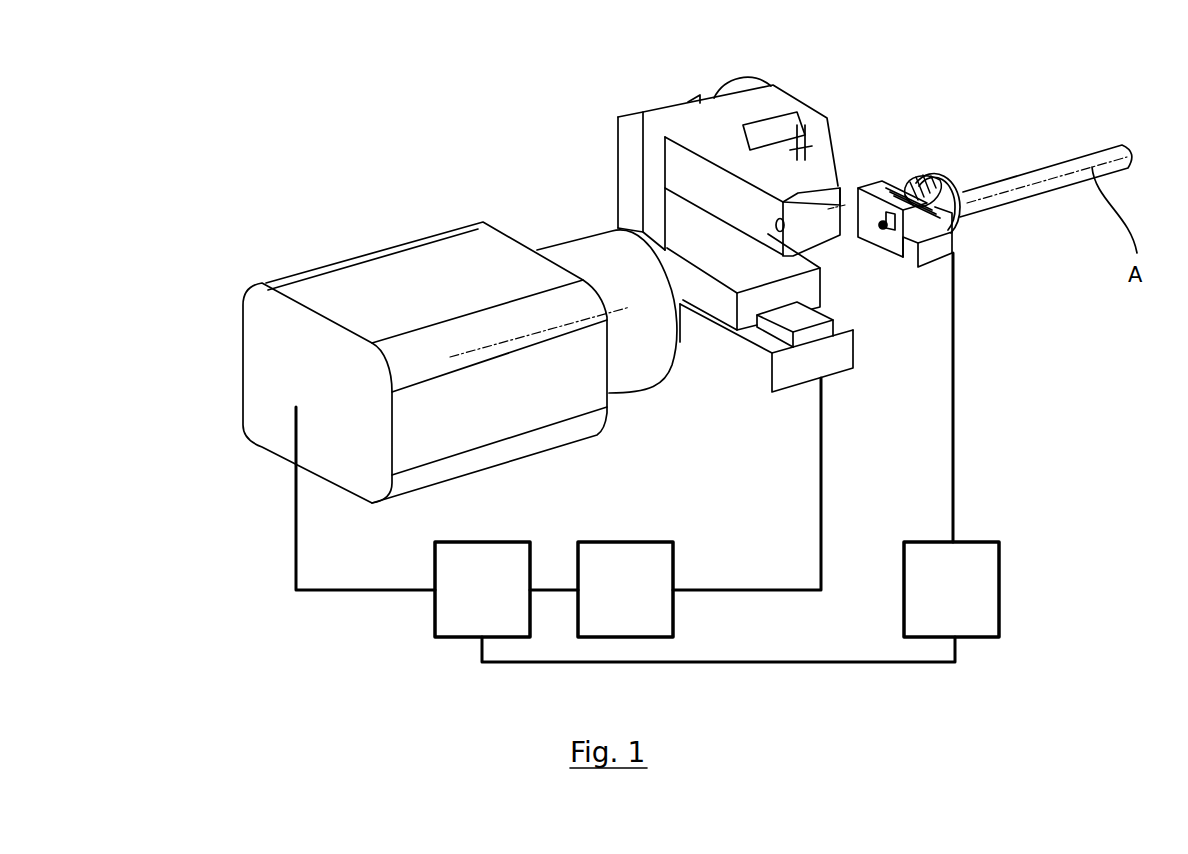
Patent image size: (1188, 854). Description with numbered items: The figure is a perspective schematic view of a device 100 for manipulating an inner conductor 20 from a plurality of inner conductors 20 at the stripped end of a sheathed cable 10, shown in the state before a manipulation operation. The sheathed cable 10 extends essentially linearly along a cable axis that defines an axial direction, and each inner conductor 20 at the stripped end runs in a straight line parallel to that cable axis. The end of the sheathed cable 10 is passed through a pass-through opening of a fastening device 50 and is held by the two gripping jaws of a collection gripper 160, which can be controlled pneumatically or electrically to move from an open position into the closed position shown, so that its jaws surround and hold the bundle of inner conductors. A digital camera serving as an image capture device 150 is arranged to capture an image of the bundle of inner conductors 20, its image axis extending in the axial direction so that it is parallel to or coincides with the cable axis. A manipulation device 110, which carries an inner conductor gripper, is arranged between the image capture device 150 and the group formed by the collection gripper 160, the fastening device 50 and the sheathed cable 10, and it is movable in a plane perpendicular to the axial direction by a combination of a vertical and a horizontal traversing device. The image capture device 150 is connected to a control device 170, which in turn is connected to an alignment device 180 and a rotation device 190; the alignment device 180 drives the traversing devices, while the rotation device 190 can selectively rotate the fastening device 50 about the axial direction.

The device for manipulating an inner conductor 100 is at (233, 575).
The image capture device 150 is at (453, 248).
The manipulation device 110 is at (800, 192).
The collection gripper 160 is at (937, 268).
The inner conductor 20 is at (885, 223).
The fastening device 50 is at (960, 217).
The sheathed cable 10 is at (1047, 183).
The control device 170 is at (435, 616).
The alignment device 180 is at (674, 568).
The rotation device 190 is at (963, 542).